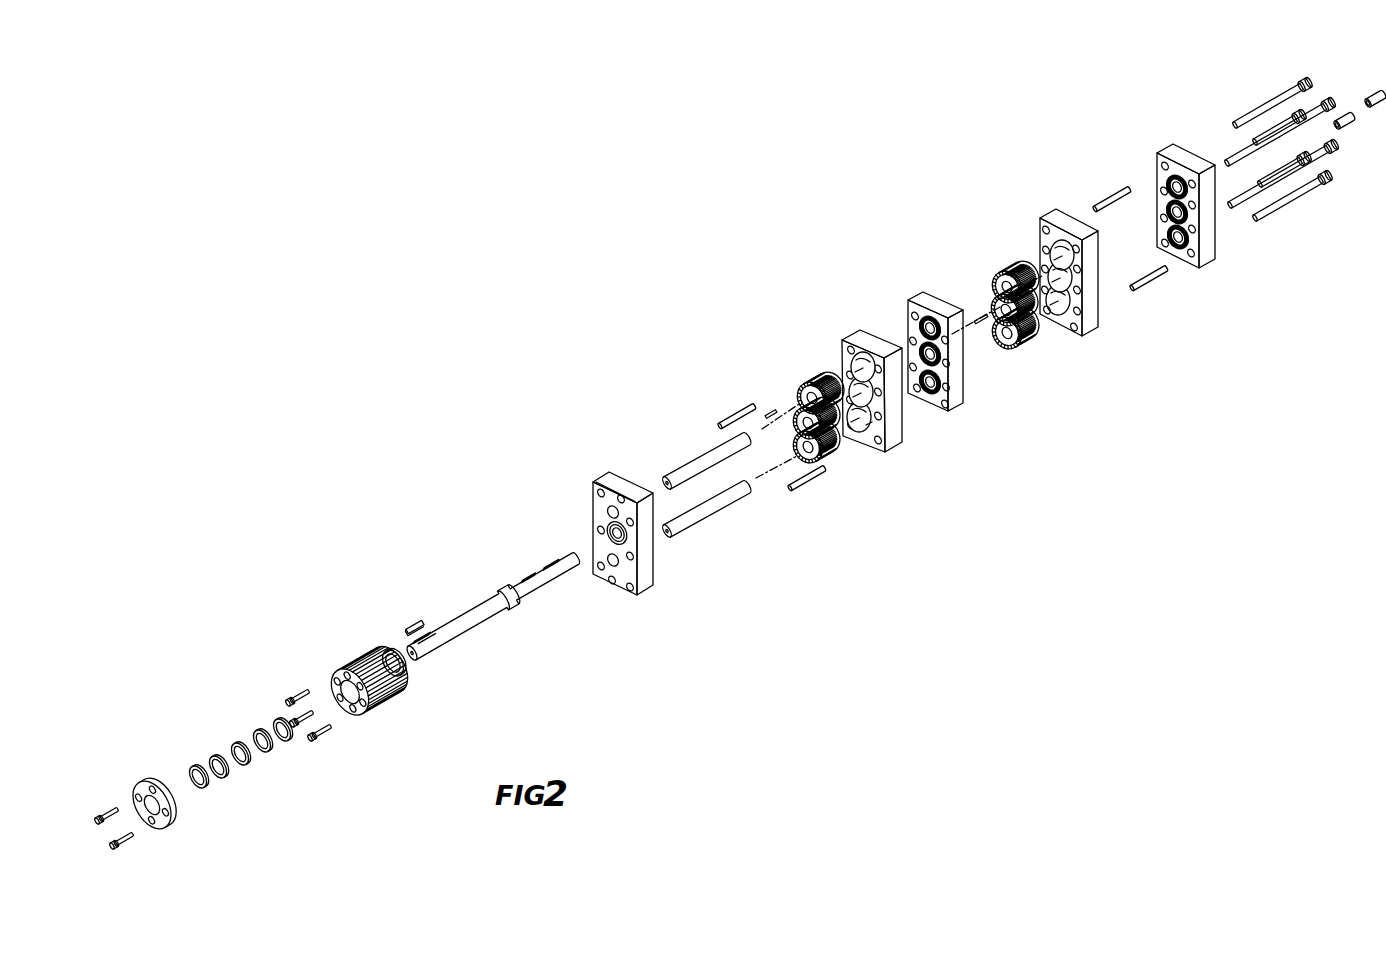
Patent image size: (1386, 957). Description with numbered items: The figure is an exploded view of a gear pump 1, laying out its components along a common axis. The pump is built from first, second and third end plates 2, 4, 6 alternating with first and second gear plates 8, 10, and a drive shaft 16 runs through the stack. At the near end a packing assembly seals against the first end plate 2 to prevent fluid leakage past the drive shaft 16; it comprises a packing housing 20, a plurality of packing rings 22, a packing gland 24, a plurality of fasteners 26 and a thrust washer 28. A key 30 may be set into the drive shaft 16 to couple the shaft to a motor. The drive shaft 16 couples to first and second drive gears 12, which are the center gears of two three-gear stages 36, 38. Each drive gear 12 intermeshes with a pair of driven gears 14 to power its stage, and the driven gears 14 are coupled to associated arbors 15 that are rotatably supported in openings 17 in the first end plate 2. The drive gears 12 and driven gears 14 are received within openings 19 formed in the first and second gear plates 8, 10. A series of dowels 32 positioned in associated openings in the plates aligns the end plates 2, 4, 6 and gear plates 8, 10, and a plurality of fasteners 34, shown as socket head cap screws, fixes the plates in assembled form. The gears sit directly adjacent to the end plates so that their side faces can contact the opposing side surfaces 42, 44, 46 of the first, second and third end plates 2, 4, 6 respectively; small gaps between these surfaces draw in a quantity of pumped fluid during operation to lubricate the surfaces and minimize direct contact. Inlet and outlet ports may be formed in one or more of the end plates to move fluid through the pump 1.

The gear pump 1 is at (542, 407).
The first end plate 2 is at (637, 594).
The second end plate 4 is at (930, 299).
The third end plate 6 is at (1183, 158).
The first gear plate 8 is at (870, 333).
The second gear plate 10 is at (1082, 331).
The drive gears 12 is at (838, 428).
The driven gears 14 is at (808, 386).
The arbors 15 is at (697, 460).
The drive shaft 16 is at (496, 617).
The openings 17 is at (606, 513).
The openings 19 is at (888, 445).
The packing housing 20 is at (365, 714).
The packing rings 22 is at (264, 732).
The packing gland 24 is at (160, 790).
The fasteners 26 is at (122, 808).
The thrust washer 28 is at (384, 652).
The key 30 is at (405, 622).
The dowels 32 is at (764, 411).
The fasteners 34 is at (1262, 105).
The first three-gear stage 36 is at (881, 286).
The second three-gear stage 38 is at (1067, 186).
The side surface 42 is at (612, 478).
The side surface 44 is at (937, 407).
The side surface 46 is at (1180, 252).